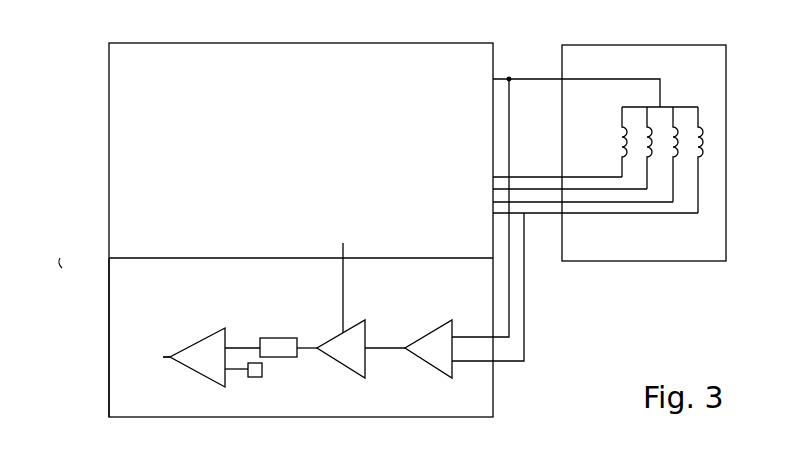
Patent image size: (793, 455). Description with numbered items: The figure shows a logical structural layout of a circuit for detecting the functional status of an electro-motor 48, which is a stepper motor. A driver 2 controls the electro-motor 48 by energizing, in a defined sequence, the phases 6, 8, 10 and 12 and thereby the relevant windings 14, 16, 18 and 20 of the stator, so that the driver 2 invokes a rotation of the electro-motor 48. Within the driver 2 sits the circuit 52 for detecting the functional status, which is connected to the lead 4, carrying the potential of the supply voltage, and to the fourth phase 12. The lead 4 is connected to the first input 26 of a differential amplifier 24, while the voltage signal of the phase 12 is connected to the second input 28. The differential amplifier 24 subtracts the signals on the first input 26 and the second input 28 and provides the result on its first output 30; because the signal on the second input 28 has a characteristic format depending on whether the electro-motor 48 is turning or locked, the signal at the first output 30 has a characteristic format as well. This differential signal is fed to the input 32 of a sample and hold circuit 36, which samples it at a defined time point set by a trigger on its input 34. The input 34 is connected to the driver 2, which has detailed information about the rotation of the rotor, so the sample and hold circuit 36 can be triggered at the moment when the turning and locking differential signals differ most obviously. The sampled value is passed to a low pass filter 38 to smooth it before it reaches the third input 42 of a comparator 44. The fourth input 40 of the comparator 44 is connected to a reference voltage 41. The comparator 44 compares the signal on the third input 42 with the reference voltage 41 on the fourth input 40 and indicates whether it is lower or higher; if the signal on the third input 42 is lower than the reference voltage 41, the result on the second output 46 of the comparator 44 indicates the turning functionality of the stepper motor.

The driver 2 is at (128, 112).
The lead 4 is at (529, 81).
The phase 6 is at (526, 175).
The phase 8 is at (540, 188).
The phase 10 is at (541, 205).
The fourth phase 12 is at (574, 215).
The winding 14 is at (620, 145).
The winding 16 is at (643, 150).
The winding 18 is at (668, 152).
The winding 20 is at (708, 150).
The differential amplifier 24 is at (438, 332).
The first input 26 is at (454, 329).
The second input 28 is at (455, 365).
The first output 30 is at (407, 356).
The input 32 is at (366, 342).
The input 34 is at (344, 325).
The sample and hold circuit 36 is at (350, 365).
The low pass filter 38 is at (273, 340).
The fourth input 40 is at (227, 378).
The reference voltage 41 is at (262, 376).
The third input 42 is at (227, 342).
The comparator 44 is at (204, 372).
The second output 46 is at (179, 354).
The electro-motor 48 is at (685, 61).
The circuit 52 is at (120, 380).